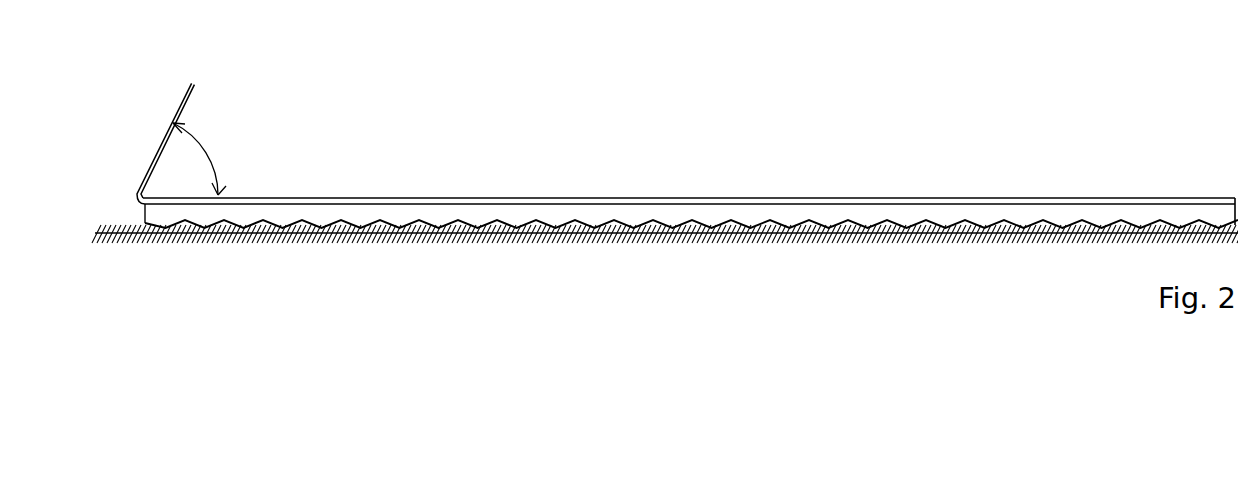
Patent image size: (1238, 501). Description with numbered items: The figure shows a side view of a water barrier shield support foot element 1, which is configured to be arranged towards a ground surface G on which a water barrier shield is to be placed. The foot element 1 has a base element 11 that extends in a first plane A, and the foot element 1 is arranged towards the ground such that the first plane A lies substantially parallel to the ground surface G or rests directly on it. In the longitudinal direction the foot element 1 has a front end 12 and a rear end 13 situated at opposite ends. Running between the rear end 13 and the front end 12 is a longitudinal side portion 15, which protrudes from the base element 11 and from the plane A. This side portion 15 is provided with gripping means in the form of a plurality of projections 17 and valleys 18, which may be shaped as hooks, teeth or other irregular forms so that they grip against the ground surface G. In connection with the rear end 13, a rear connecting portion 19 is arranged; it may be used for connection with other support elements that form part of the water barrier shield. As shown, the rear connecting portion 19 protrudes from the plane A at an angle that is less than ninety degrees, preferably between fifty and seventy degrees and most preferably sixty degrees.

The water barrier shield support foot element 1 is at (875, 118).
The base element 11 is at (862, 193).
The front end 12 is at (1227, 203).
The rear end 13 is at (147, 202).
The second longitudinal side portion 15 is at (497, 213).
The projections 17 is at (598, 232).
The valleys 18 is at (731, 222).
The rear connecting portion 19 is at (190, 108).
The first plane A is at (502, 197).
The ground surface G is at (1003, 235).